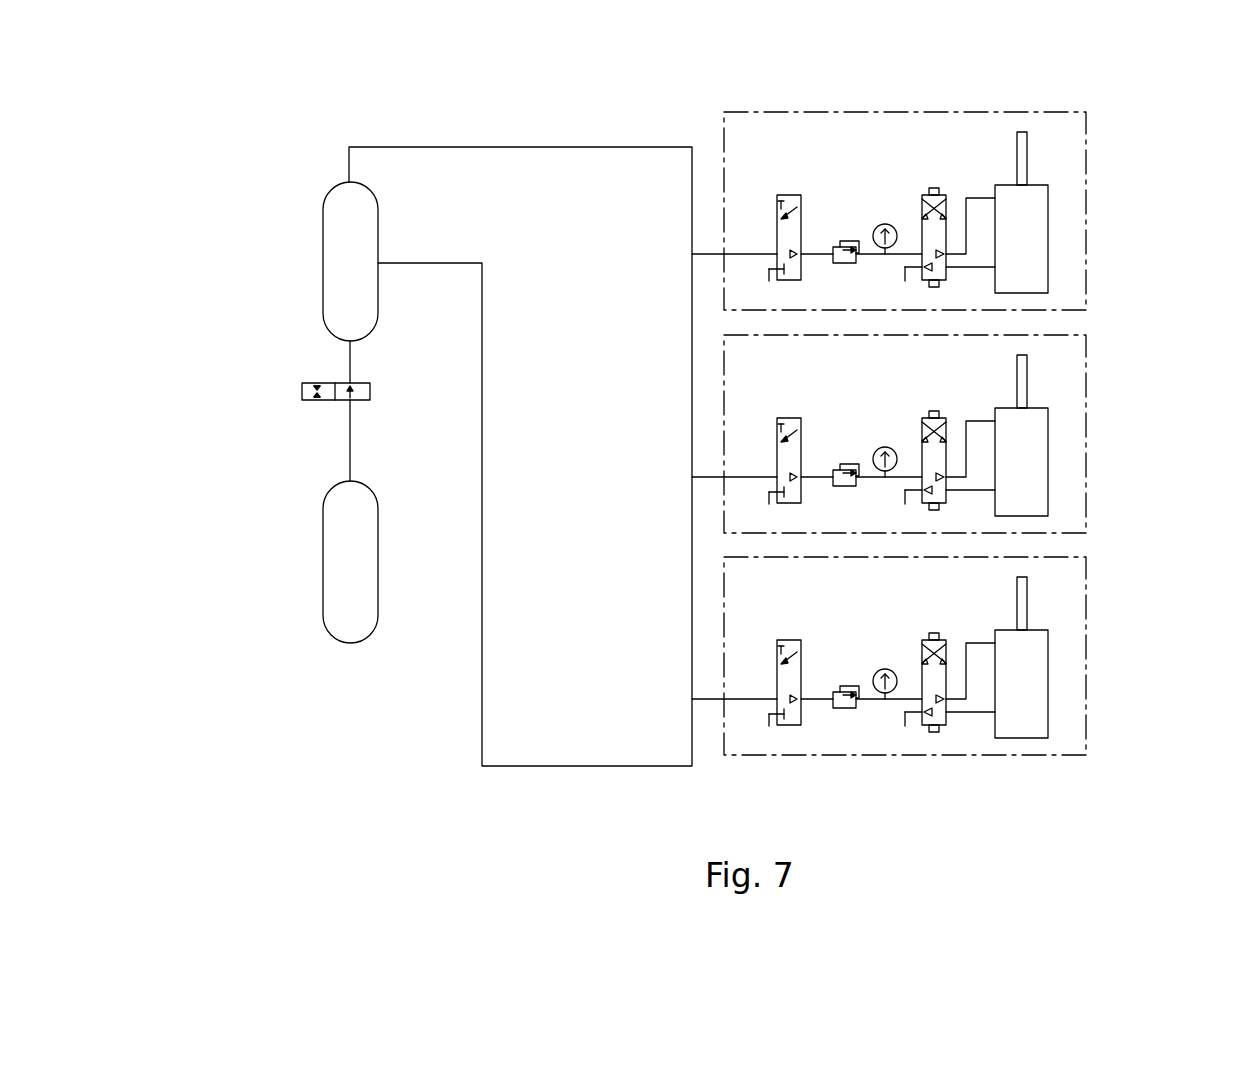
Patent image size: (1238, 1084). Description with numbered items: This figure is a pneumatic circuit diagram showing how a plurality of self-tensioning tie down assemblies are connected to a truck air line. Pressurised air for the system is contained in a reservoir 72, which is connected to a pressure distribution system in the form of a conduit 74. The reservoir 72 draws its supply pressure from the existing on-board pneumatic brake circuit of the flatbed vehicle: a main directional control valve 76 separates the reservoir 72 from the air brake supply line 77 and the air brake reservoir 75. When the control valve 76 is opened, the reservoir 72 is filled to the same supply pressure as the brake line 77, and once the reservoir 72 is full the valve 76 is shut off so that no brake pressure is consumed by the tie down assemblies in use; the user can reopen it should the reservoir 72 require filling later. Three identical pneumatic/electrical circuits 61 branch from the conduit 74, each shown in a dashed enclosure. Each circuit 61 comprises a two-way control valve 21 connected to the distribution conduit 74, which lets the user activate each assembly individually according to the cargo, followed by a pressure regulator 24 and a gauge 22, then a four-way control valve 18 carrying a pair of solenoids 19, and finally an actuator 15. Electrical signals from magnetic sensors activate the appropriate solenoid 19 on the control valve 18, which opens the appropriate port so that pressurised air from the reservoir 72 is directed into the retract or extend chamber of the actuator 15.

The actuator 15 is at (1033, 182).
The 4-way control valve 18 is at (937, 187).
The solenoids 19 is at (924, 195).
The 2-way control valve 21 is at (777, 194).
The pressure gauge 22 is at (884, 224).
The pressure regulator 24 is at (838, 240).
The pneumatic/electrical circuit 61 is at (1104, 217).
The reservoir 72 is at (315, 220).
The conduit 74 is at (443, 133).
The air brake reservoir 75 is at (317, 528).
The main directional control valve 76 is at (298, 373).
The air brake supply line 77 is at (343, 433).